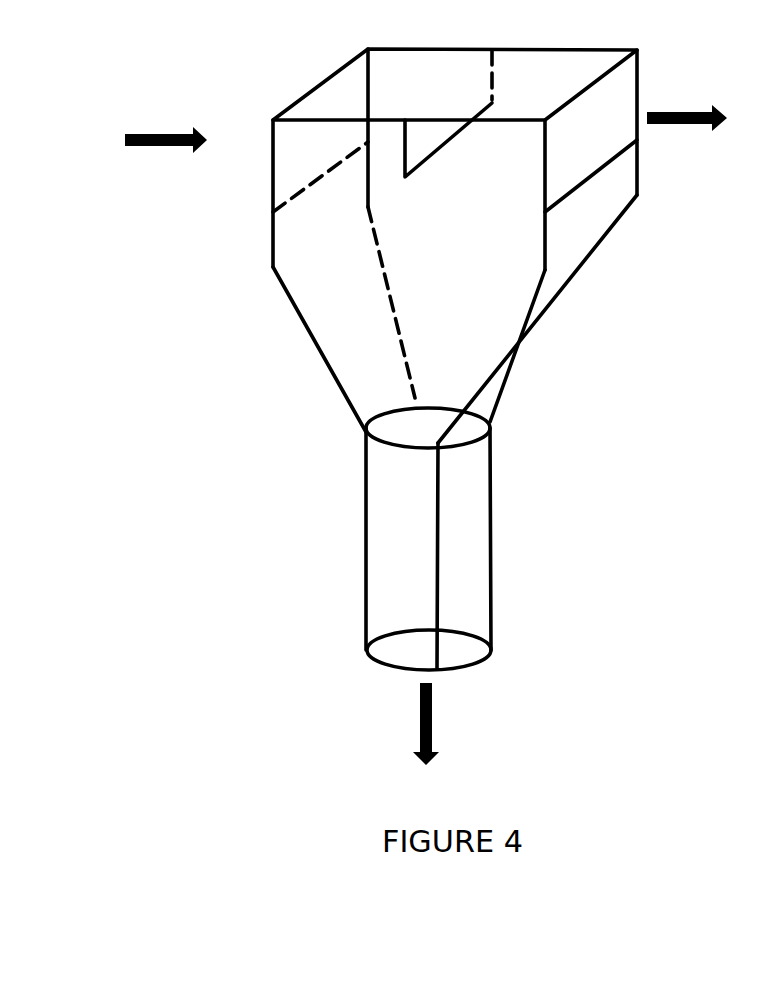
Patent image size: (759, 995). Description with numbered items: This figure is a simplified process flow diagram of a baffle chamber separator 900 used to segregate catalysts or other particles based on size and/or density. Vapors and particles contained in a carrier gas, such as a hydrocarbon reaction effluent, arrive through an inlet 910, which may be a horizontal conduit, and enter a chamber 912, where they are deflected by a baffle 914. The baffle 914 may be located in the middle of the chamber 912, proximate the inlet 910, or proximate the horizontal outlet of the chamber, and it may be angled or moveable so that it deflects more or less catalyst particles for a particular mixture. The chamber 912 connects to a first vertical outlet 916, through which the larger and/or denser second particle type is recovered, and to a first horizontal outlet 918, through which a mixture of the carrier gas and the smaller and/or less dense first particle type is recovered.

The baffle chamber separator 900 is at (217, 396).
The inlet 910 is at (134, 140).
The chamber 912 is at (455, 432).
The baffle 914 is at (448, 113).
The first vertical outlet 916 is at (444, 724).
The first horizontal outlet 918 is at (687, 129).